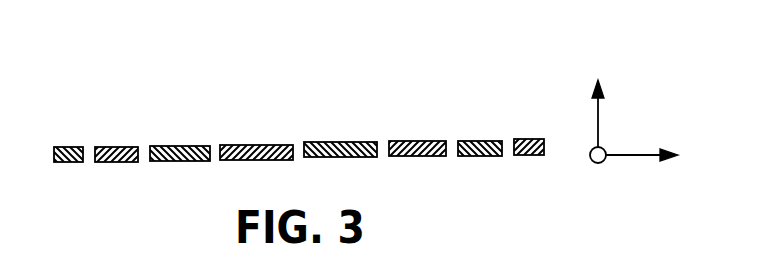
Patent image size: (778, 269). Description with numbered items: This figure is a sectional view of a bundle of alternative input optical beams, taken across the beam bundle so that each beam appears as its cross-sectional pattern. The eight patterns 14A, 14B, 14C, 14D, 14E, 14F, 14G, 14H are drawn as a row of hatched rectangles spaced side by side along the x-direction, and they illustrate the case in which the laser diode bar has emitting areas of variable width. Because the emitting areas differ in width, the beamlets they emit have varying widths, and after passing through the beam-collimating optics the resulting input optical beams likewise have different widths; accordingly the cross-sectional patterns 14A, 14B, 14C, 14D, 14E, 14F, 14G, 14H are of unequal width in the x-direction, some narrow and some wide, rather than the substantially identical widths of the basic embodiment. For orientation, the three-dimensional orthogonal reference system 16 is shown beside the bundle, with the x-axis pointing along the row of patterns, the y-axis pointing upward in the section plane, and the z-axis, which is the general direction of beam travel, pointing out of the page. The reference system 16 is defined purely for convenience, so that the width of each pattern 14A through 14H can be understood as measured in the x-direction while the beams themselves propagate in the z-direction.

The cross-sectional pattern 14A is at (70, 145).
The cross-sectional pattern 14B is at (119, 145).
The cross-sectional pattern 14C is at (180, 144).
The cross-sectional pattern 14D is at (257, 143).
The cross-sectional pattern 14E is at (340, 140).
The cross-sectional pattern 14F is at (417, 139).
The cross-sectional pattern 14G is at (480, 139).
The cross-sectional pattern 14H is at (530, 137).
The three-dimensional orthogonal reference system 16 is at (652, 78).